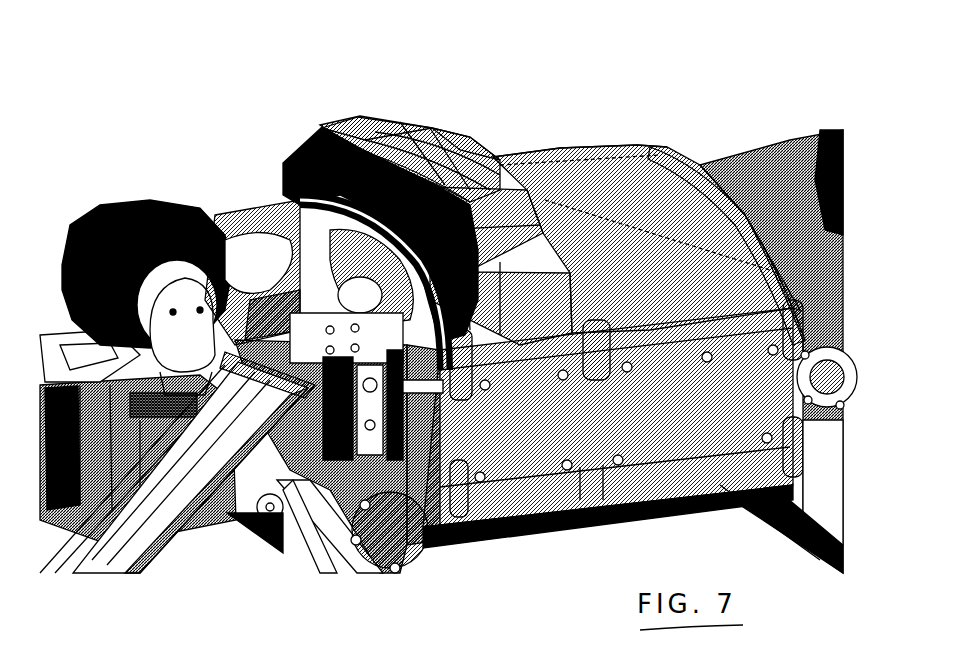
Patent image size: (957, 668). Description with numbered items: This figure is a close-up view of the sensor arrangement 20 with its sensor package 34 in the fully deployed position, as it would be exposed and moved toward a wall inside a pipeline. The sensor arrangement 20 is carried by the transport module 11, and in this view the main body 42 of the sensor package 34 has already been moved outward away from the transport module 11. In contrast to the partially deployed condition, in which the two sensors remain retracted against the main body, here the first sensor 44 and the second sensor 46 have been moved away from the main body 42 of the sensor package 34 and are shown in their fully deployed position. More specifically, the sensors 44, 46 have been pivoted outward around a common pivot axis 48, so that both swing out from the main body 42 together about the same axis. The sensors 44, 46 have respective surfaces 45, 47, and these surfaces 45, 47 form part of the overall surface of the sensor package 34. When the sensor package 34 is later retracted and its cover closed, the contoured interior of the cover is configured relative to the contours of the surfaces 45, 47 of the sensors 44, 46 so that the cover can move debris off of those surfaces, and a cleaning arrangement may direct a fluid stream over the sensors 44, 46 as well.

The transport module 11 is at (245, 72).
The sensor arrangement 20 is at (540, 93).
The sensor package 34 is at (292, 158).
The main body 42 is at (300, 185).
The sensor 44 is at (353, 121).
The surface 45 is at (424, 123).
The sensor 46 is at (530, 192).
The surface 47 is at (501, 266).
The common pivot axis 48 is at (623, 137).